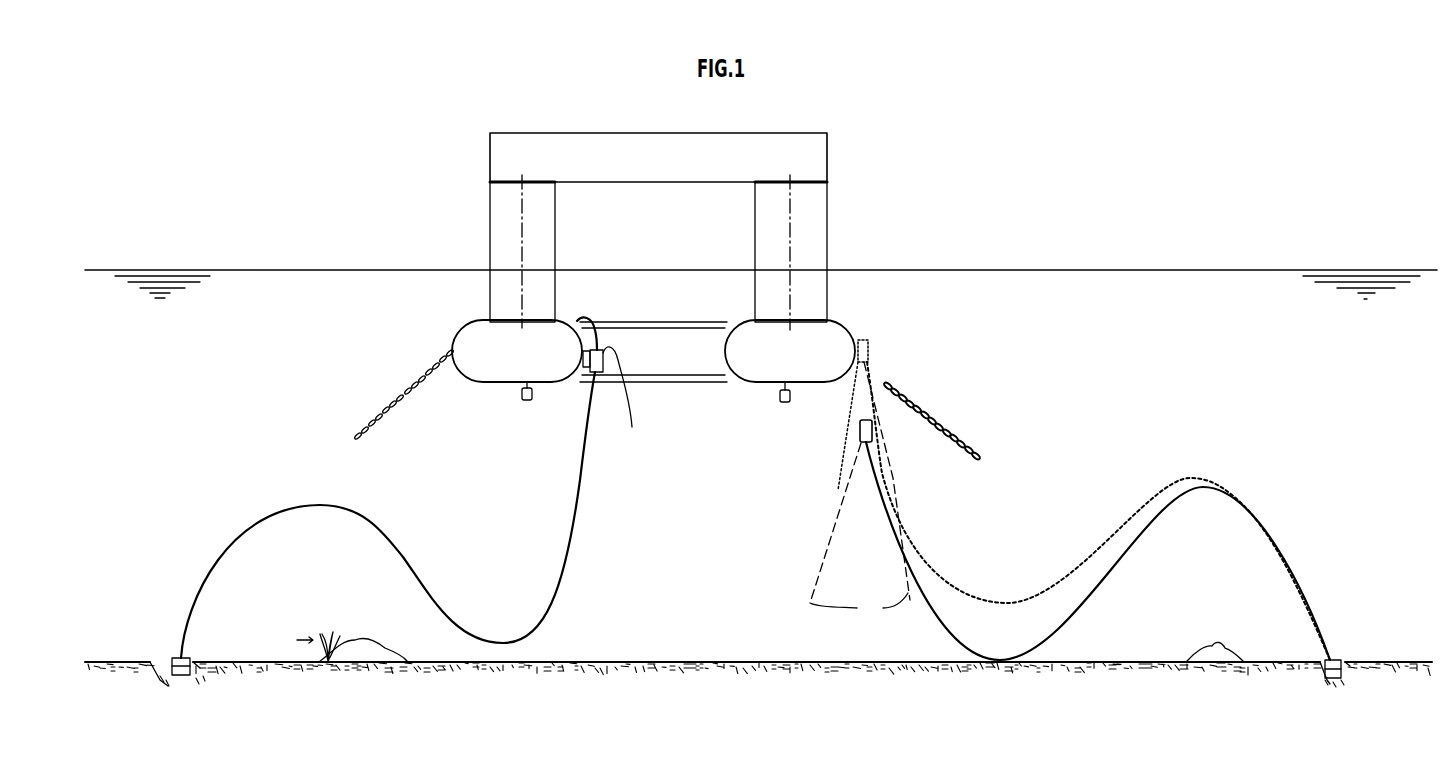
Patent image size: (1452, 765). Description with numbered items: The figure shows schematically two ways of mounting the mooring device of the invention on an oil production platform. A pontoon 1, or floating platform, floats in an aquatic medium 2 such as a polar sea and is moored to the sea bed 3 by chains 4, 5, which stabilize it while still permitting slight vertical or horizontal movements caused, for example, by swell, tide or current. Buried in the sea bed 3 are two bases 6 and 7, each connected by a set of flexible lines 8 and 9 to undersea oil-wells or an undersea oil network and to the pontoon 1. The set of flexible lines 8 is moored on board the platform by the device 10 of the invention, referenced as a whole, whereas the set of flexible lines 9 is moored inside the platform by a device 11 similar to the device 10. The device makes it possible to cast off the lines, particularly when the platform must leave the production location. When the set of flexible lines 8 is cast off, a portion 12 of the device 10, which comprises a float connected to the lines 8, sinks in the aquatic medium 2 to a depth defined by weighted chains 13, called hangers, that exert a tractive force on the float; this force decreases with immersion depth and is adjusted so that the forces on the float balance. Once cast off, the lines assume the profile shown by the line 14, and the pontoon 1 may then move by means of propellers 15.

The pontoon 1 is at (500, 192).
The aquatic medium 2 is at (1215, 309).
The sea bed 3 is at (692, 661).
The chain 4 is at (947, 435).
The chain 5 is at (402, 400).
The base 6 is at (1343, 662).
The base 7 is at (163, 667).
The set of flexible lines 8 is at (1130, 503).
The set of flexible lines 9 is at (220, 557).
The device 10 is at (877, 354).
The device 11 is at (612, 389).
The portion of the device 12 is at (858, 432).
The weighted chains 13 is at (860, 496).
The line 14 is at (1090, 603).
The propellers 15 is at (526, 401).